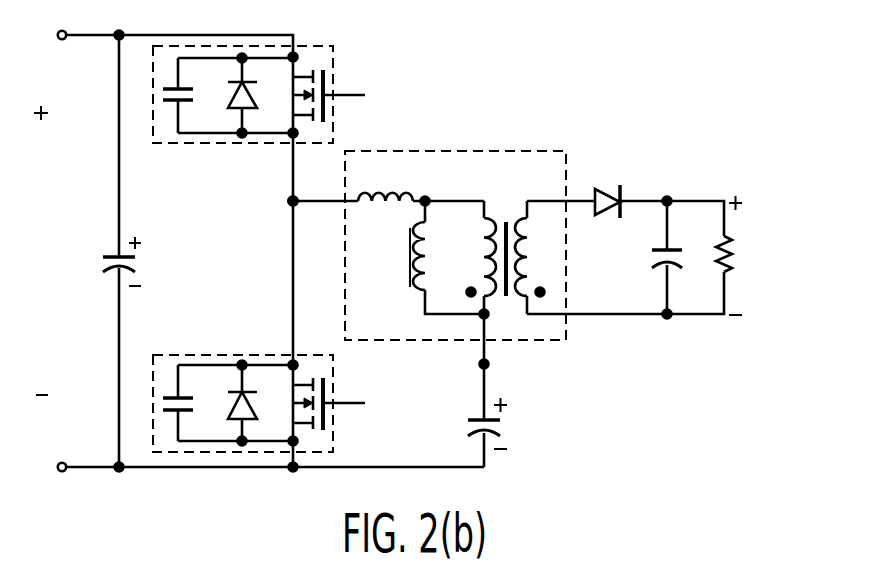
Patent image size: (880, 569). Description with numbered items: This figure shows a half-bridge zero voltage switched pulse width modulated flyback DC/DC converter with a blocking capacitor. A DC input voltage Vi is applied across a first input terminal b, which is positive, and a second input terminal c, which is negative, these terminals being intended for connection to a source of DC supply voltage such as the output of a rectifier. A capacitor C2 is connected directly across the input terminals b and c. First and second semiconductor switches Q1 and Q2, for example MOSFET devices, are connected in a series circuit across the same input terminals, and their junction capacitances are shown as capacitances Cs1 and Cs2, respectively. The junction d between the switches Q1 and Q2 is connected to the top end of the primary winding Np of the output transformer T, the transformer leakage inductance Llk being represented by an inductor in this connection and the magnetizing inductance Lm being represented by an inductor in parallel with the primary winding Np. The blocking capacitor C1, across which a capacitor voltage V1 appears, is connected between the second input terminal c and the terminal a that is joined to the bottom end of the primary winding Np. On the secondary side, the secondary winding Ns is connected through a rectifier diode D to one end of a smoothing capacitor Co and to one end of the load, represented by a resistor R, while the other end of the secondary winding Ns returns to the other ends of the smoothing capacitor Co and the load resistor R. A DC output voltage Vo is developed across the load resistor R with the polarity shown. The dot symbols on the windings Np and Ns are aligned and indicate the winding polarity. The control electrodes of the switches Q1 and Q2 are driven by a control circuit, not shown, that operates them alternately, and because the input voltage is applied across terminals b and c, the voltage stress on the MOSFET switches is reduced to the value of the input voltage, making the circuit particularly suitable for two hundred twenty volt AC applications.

The first input terminal b is at (51, 34).
The second input terminal c is at (51, 467).
The junction point d is at (284, 202).
The terminal a is at (476, 366).
The input voltage Vi is at (42, 250).
The capacitor C2 is at (135, 262).
The junction capacitance Cs2 is at (243, 111).
The second semiconductor switch Q2 is at (329, 91).
The junction capacitance Cs1 is at (243, 389).
The first semiconductor switch Q1 is at (329, 403).
The output transformer T is at (444, 245).
The leakage inductance Llk is at (413, 186).
The magnetizing inductance Lm is at (399, 256).
The primary winding Np is at (474, 257).
The secondary winding Ns is at (538, 257).
The rectifier diode D is at (607, 186).
The smoothing capacitor Co is at (652, 257).
The load resistor R is at (715, 256).
The DC output voltage Vo is at (745, 255).
The blocking capacitor C1 is at (466, 425).
The capacitor voltage V1 is at (512, 423).